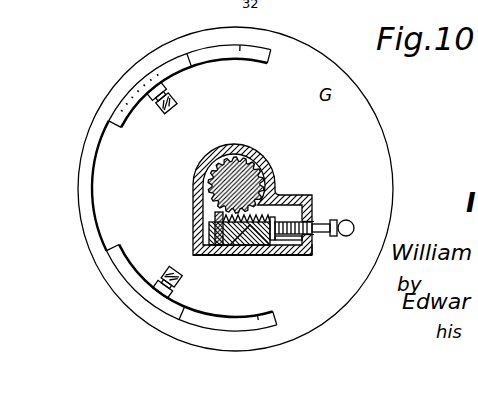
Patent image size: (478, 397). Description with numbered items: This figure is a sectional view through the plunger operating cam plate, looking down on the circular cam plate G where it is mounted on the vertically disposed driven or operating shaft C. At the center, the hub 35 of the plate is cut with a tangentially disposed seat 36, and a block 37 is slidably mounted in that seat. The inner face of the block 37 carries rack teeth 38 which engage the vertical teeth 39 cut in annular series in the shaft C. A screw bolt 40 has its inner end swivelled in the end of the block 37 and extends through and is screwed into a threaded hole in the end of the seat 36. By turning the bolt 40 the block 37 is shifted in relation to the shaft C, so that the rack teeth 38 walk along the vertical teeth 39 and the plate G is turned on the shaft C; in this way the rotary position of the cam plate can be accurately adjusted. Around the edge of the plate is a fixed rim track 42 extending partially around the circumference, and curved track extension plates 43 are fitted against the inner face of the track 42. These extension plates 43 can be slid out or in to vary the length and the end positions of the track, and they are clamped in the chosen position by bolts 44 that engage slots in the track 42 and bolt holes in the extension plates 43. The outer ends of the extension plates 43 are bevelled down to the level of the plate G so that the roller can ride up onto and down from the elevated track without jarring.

The hub 35 is at (206, 166).
The tangentially disposed seat 36 is at (312, 250).
The block 37 is at (252, 255).
The rack teeth 38 is at (218, 255).
The vertical teeth 39 is at (273, 166).
The screw bolt 40 is at (342, 221).
The fixed rim track 42 is at (92, 124).
The track extension plates 43 is at (210, 49).
The bolts 44 is at (169, 104).
The driven or operating shaft C is at (236, 157).